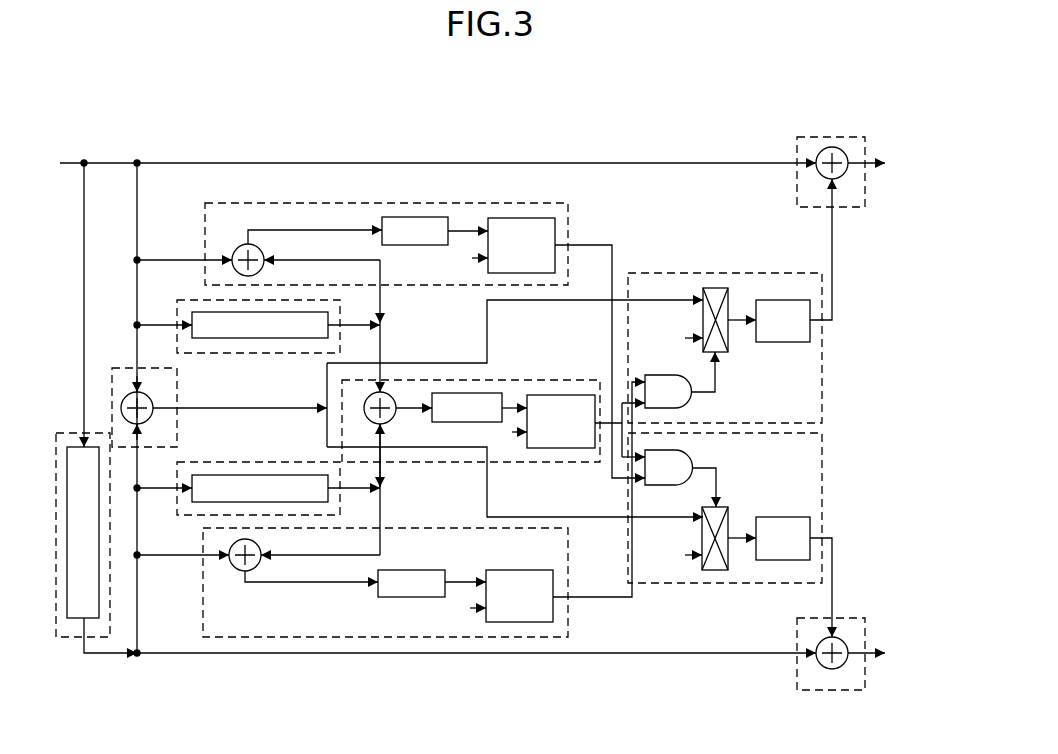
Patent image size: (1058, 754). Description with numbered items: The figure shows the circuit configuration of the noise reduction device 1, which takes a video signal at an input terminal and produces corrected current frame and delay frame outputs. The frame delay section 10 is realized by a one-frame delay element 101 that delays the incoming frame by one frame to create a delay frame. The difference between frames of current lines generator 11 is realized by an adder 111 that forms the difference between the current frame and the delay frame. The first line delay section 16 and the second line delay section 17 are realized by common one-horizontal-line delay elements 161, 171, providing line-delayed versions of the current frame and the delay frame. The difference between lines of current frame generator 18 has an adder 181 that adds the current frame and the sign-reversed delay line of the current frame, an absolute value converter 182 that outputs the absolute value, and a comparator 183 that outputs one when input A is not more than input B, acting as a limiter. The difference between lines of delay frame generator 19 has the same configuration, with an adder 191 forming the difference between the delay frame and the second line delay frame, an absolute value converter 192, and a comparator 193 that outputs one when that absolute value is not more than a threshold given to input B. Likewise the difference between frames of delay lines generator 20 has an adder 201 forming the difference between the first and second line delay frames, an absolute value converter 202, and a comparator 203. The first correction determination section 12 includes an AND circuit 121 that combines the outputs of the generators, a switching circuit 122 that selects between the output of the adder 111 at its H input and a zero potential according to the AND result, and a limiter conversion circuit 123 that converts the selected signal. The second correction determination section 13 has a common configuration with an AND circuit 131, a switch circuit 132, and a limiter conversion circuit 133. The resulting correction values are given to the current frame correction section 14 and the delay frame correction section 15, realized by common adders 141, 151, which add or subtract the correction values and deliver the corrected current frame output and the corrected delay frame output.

The noise reduction device 1 is at (492, 692).
The frame delay section 10 is at (121, 400).
The one-frame delay element 101 is at (99, 592).
The difference between frames of current lines generator 11 is at (219, 407).
The adder 111 is at (153, 402).
The first correction determination section 12 is at (730, 301).
The AND circuit 121 is at (692, 400).
The switching circuit 122 is at (712, 288).
The limiter conversion circuit 123 is at (783, 342).
The second correction determination section 13 is at (756, 535).
The AND circuit 131 is at (692, 456).
The switch circuit 132 is at (744, 500).
The limiter conversion circuit 133 is at (783, 517).
The current frame correction section 14 is at (810, 186).
The adder 141 is at (841, 180).
The delay frame correction section 15 is at (815, 645).
The adder 151 is at (846, 645).
The first line delay section 16 is at (258, 334).
The one-horizontal-line delay element 161 is at (270, 338).
The second line delay section 17 is at (258, 489).
The one-horizontal-line delay element 171 is at (262, 475).
The difference between lines of current frame generator 18 is at (373, 229).
The adder 181 is at (238, 247).
The absolute value converter 182 is at (424, 217).
The comparator 183 is at (555, 218).
The difference between lines of delay frame generator 19 is at (352, 604).
The adder 191 is at (238, 571).
The absolute value converter 192 is at (394, 597).
The comparator 193 is at (500, 570).
The difference between frames of delay lines generator 20 is at (471, 423).
The adder 201 is at (386, 392).
The absolute value converter 202 is at (478, 393).
The comparator 203 is at (542, 395).